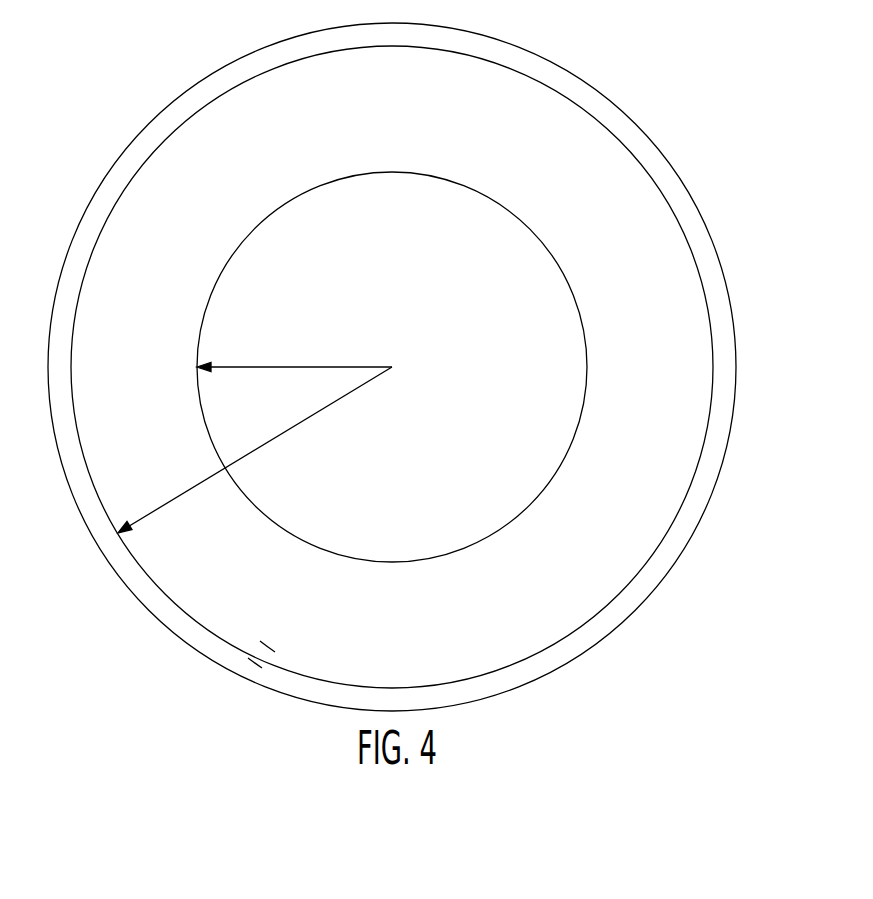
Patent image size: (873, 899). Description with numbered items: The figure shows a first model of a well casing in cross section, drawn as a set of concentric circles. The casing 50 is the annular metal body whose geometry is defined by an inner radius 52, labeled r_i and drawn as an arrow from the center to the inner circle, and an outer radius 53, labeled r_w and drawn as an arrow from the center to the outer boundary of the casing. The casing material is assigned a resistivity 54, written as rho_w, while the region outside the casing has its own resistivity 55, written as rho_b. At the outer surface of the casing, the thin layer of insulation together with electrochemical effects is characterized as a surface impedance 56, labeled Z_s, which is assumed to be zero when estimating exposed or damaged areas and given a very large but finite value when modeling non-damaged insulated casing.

The casing 50 is at (147, 379).
The inner radius 52 is at (307, 366).
The outer radius 53 is at (324, 409).
The casing resistivity 54 is at (563, 561).
The region resistivity 55 is at (682, 661).
The surface impedance 56 is at (284, 672).